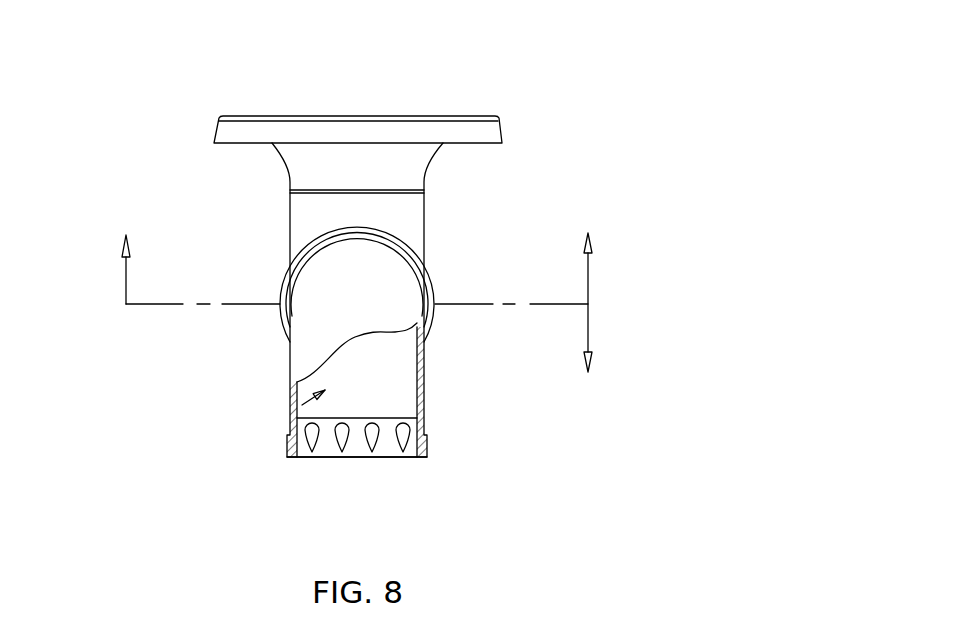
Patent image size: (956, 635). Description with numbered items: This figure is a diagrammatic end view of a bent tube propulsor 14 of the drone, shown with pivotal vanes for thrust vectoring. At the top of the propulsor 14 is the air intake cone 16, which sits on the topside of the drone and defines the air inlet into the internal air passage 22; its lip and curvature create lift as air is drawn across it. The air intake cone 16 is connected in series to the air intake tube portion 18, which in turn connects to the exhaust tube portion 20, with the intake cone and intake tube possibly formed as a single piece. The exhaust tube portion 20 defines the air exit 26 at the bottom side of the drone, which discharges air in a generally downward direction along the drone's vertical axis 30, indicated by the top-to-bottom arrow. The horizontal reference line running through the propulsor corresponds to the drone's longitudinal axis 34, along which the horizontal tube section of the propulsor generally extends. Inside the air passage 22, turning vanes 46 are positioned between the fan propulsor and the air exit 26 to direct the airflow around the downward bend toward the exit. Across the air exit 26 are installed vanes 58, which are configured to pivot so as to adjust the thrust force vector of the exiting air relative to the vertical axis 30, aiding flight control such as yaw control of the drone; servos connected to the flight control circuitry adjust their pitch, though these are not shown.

The bent tube propulsor 14 is at (542, 88).
The air intake cone 16 is at (257, 116).
The air intake tube portion 18 is at (413, 208).
The exhaust tube portion 20 is at (308, 333).
The internal air passage 22 is at (300, 406).
The air exit 26 is at (307, 462).
The vertical axis 30 is at (589, 280).
The longitudinal axis 34 is at (513, 305).
The turning vanes 46 is at (403, 395).
The vanes 58 is at (318, 458).